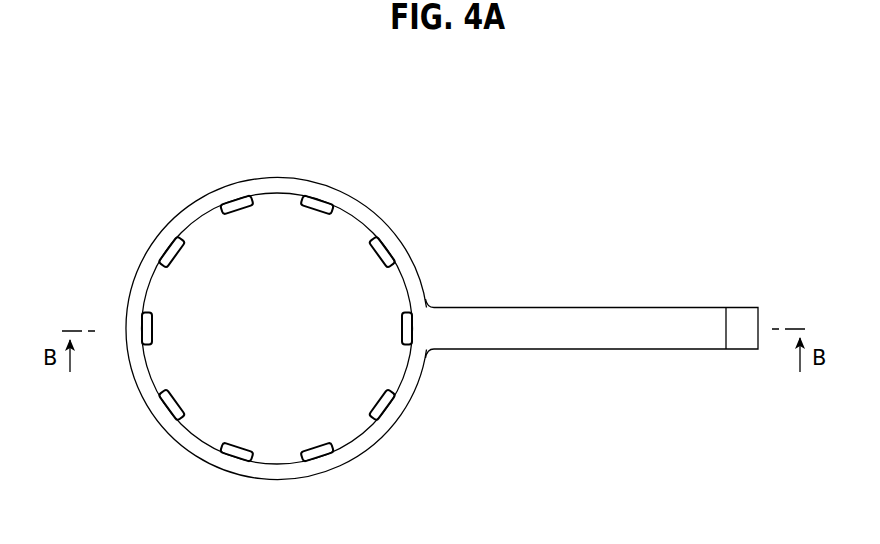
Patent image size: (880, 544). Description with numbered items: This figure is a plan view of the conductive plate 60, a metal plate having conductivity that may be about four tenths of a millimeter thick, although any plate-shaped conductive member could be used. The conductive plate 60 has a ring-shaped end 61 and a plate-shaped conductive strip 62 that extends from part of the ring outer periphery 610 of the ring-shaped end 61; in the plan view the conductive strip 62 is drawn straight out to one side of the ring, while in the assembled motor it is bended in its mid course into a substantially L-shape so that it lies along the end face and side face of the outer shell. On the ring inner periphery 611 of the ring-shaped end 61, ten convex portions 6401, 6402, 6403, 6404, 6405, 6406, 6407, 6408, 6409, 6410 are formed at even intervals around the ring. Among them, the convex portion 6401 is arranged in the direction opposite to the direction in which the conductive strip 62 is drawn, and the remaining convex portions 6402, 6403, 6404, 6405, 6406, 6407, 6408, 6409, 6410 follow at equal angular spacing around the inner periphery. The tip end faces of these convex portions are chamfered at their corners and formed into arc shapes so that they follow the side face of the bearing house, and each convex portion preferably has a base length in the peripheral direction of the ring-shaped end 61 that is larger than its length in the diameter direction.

The conductive plate 60 is at (575, 187).
The ring-shaped end 61 is at (395, 200).
The ring outer periphery 610 is at (418, 275).
The ring inner periphery 611 is at (355, 223).
The conductive strip 62 is at (643, 318).
The convex portion 6401 is at (147, 326).
The convex portion 6402 is at (172, 250).
The convex portion 6403 is at (233, 202).
The convex portion 6404 is at (320, 208).
The convex portion 6405 is at (392, 252).
The convex portion 6406 is at (412, 330).
The convex portion 6407 is at (385, 403).
The convex portion 6408 is at (320, 453).
The convex portion 6409 is at (237, 453).
The convex portion 6410 is at (170, 405).